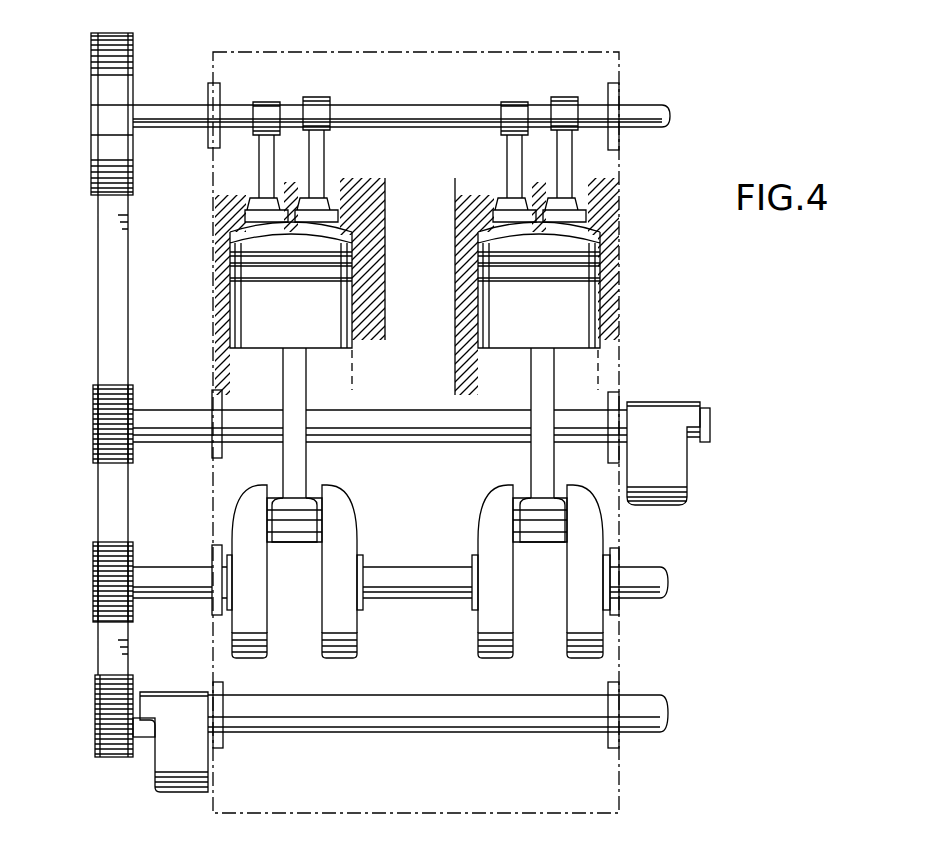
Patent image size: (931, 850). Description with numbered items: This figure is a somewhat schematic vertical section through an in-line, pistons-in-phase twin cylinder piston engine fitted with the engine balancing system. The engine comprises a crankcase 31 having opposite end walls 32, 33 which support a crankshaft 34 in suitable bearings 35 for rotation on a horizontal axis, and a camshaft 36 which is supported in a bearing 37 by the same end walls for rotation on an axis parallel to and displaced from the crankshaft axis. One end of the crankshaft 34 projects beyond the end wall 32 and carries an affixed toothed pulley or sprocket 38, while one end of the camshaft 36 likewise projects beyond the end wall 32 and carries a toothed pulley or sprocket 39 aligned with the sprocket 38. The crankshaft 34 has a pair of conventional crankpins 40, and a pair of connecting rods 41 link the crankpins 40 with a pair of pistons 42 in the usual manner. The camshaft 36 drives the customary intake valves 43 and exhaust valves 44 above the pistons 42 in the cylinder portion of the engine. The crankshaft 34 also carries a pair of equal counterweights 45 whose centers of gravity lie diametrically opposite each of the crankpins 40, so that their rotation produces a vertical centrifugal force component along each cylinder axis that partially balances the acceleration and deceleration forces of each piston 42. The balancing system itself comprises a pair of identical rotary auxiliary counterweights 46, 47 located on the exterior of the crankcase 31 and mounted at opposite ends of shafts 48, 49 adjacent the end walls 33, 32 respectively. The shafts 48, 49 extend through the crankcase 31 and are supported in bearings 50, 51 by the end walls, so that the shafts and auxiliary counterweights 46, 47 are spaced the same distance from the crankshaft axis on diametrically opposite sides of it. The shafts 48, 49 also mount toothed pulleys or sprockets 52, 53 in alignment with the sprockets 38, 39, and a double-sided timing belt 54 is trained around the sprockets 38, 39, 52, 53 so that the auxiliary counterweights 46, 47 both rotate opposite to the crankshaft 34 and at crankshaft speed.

The crankcase 31 is at (396, 817).
The end wall 32 is at (213, 280).
The end wall 33 is at (620, 290).
The crankshaft 34 is at (436, 565).
The bearings 35 is at (216, 550).
The camshaft 36 is at (432, 100).
The bearing 37 is at (219, 83).
The toothed pulley or sprocket 38 is at (95, 545).
The toothed pulley or sprocket 39 is at (92, 190).
The crankpins 40 is at (265, 538).
The connecting rods 41 is at (307, 458).
The pistons 42 is at (301, 320).
The intake valves 43 is at (262, 168).
The exhaust valves 44 is at (318, 155).
The counterweights 45 is at (324, 655).
The auxiliary counterweight 46 is at (689, 482).
The auxiliary counterweight 47 is at (160, 790).
The shaft 48 is at (392, 412).
The shaft 49 is at (395, 735).
The bearings 50 is at (215, 390).
The bearings 51 is at (222, 745).
The toothed pulley or sprocket 52 is at (95, 405).
The toothed pulley or sprocket 53 is at (92, 695).
The double-sided timing belt 54 is at (98, 340).